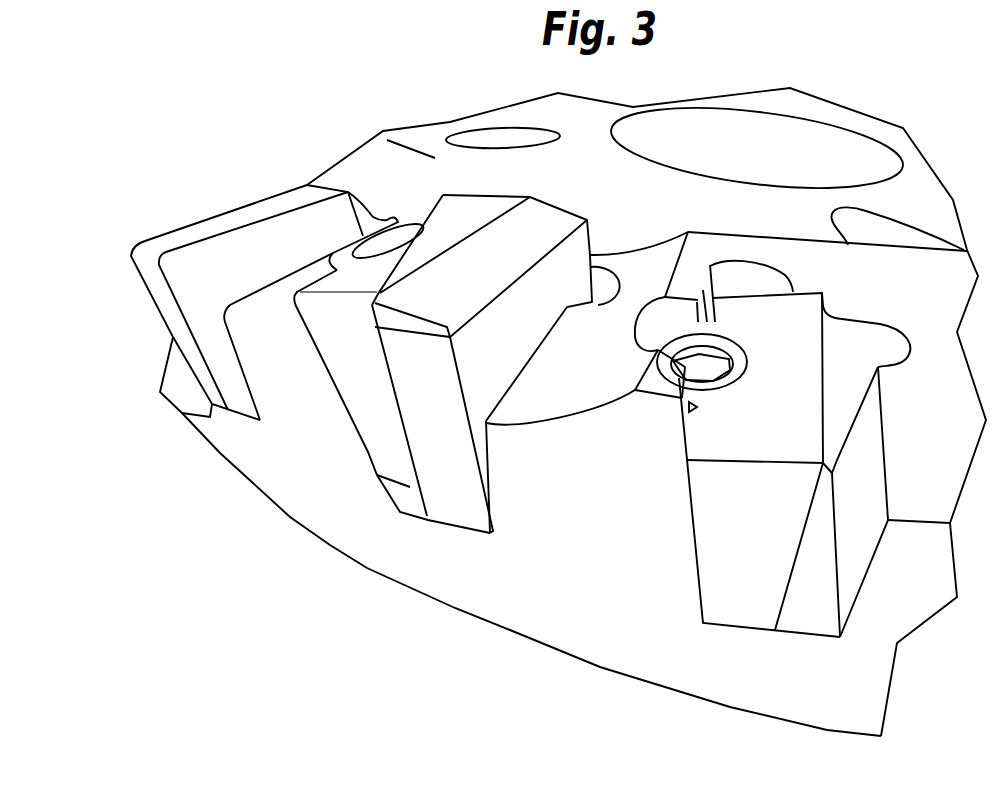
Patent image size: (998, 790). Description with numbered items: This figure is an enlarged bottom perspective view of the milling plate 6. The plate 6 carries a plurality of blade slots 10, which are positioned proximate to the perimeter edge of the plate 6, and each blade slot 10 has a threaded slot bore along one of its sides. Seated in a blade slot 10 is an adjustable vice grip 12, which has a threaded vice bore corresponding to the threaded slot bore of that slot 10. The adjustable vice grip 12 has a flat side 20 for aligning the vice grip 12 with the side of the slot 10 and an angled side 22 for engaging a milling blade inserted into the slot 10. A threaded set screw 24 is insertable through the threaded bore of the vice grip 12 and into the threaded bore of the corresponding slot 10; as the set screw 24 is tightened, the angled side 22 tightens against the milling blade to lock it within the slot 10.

The milling plate 6 is at (150, 406).
The blade slot 10 is at (403, 512).
The adjustable vice grip 12 is at (368, 452).
The flat side 20 is at (697, 573).
The angled side 22 is at (780, 603).
The threaded set screw 24 is at (685, 377).